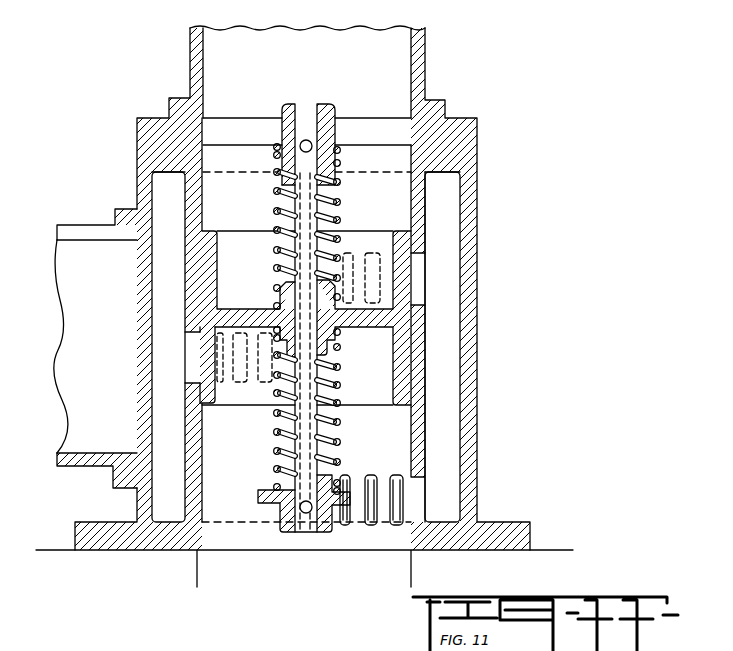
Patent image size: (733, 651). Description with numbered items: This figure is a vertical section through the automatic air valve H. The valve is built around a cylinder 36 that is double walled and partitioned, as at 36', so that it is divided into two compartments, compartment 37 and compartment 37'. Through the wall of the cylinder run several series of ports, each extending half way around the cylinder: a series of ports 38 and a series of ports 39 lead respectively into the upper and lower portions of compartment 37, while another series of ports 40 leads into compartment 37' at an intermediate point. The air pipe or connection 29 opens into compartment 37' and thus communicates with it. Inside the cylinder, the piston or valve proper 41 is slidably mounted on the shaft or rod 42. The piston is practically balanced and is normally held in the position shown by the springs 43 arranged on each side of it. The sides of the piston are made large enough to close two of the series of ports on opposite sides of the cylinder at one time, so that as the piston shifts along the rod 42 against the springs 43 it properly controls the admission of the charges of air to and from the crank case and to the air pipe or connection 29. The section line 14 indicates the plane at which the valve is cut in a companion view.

The section line 14- 14 is at (516, 131).
The air pipe or connection 29 is at (75, 395).
The cylinder 36 is at (360, 320).
The partition 36' is at (469, 438).
The compartment 37 is at (470, 347).
The compartment 37' is at (134, 347).
The ports 38 is at (418, 285).
The ports 39 is at (413, 490).
The ports 40 is at (192, 352).
The piston or valve proper 41 is at (383, 363).
The shaft or rod 42 is at (305, 527).
The springs 43 is at (277, 452).
The automatic air valve H is at (475, 323).